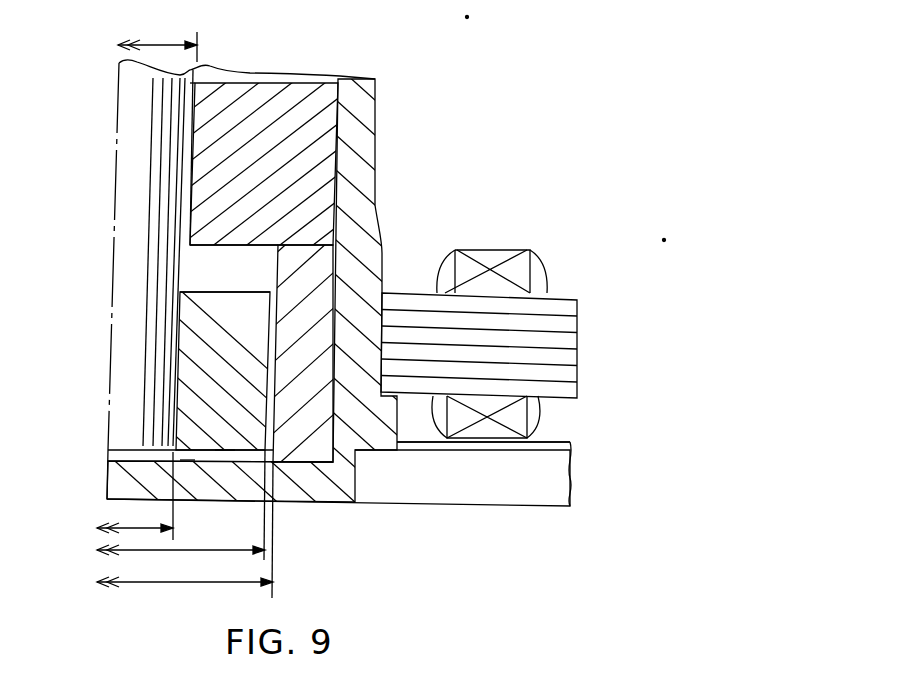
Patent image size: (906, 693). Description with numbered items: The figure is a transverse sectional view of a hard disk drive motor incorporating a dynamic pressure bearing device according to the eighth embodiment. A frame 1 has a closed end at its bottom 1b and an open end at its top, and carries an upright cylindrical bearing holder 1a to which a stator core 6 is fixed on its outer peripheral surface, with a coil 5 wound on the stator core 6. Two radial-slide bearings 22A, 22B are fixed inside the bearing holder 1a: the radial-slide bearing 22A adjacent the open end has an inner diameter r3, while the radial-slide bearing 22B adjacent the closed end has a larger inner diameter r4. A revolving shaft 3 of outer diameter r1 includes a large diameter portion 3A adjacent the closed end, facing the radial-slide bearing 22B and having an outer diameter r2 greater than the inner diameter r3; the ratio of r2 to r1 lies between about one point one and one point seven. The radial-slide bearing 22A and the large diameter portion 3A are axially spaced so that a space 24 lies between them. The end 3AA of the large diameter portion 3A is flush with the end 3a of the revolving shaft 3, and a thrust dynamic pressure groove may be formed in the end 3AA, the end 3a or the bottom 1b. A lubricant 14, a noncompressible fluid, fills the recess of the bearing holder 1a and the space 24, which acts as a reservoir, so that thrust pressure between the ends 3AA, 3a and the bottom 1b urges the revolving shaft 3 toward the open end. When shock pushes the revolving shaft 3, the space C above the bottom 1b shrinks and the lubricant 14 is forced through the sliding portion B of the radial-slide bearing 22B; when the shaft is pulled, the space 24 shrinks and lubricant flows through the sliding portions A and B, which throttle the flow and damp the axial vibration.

The frame 1 is at (418, 524).
The bearing holder 1a is at (372, 224).
The bottom 1b is at (120, 482).
The revolving shaft 3 is at (128, 190).
The large diameter portion 3A is at (187, 372).
The end of the large diameter portion 3AA is at (223, 452).
The end of the revolving shaft 3a is at (107, 455).
The coil 5 is at (530, 272).
The stator core 6 is at (565, 323).
The lubricant 14 is at (188, 248).
The radial-slide bearing 22A is at (272, 95).
The radial-slide bearing 22B is at (290, 385).
The sliding portion A is at (190, 87).
The sliding portion B is at (277, 470).
The space C is at (187, 462).
The space 24 is at (235, 270).
The outer diameter of the revolving shaft r1 is at (135, 496).
The outer diameter of the large diameter portion r2 is at (181, 505).
The inner diameter of the radial-slide bearing 22A r3 is at (157, 39).
The inner diameter of the radial-slide bearing 22B r4 is at (185, 530).